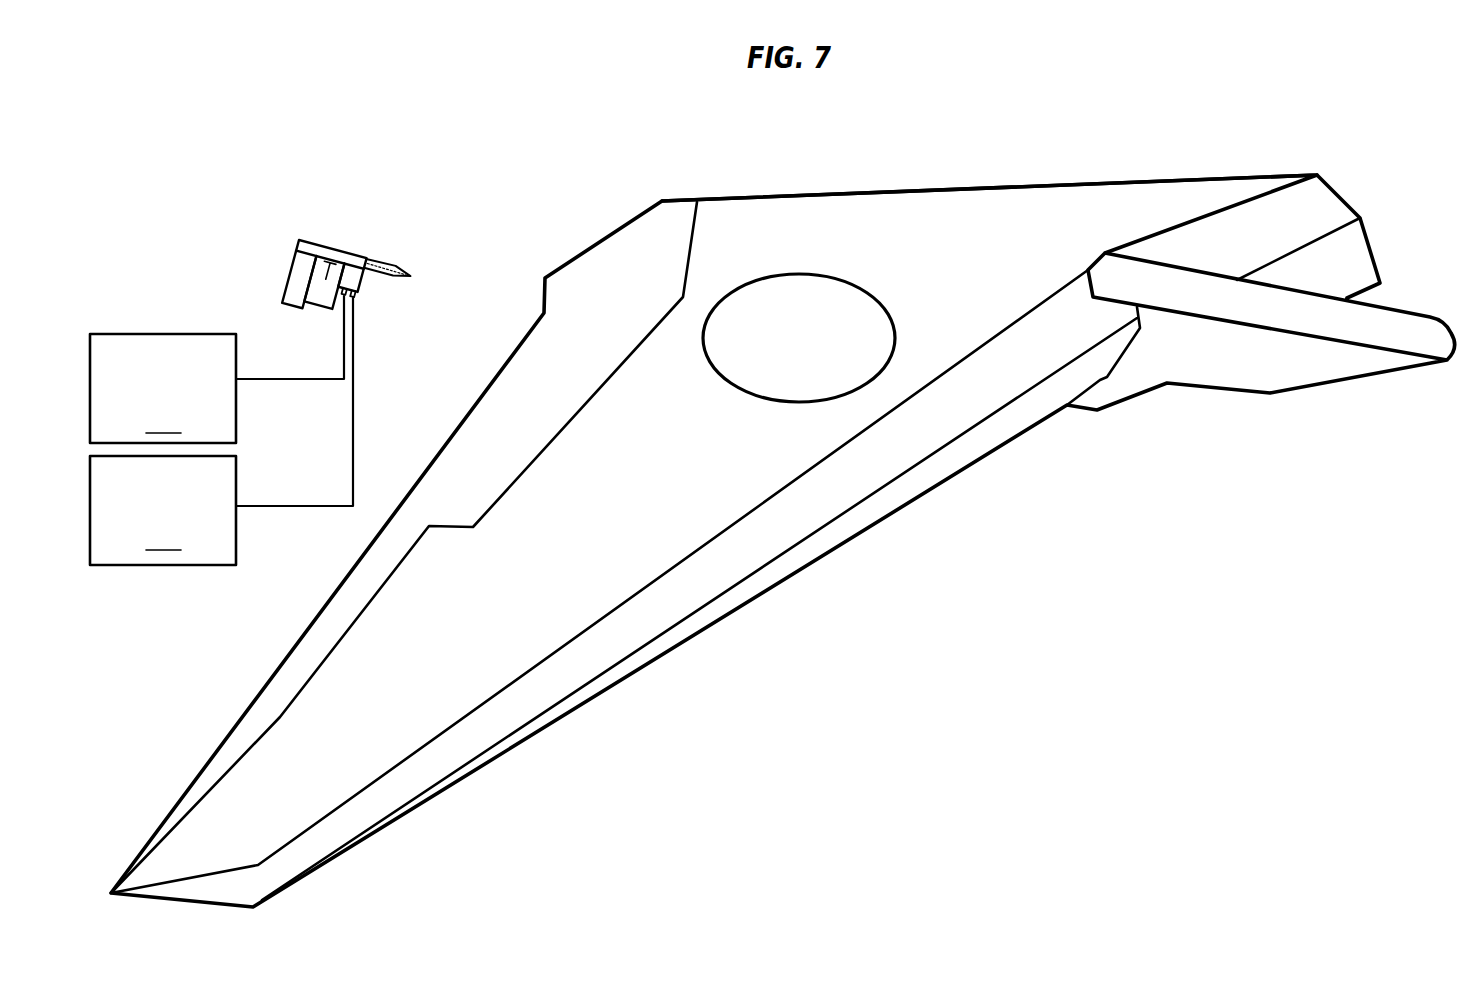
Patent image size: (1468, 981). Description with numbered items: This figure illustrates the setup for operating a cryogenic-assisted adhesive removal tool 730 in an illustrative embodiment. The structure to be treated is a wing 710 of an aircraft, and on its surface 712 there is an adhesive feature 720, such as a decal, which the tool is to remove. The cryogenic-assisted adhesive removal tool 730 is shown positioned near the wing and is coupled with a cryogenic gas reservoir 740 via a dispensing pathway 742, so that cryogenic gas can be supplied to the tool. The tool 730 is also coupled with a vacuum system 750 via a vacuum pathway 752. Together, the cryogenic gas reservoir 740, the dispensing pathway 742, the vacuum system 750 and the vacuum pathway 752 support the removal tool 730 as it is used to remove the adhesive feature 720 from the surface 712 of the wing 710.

The wing 710 is at (830, 193).
The surface 712 is at (957, 256).
The adhesive feature 720 is at (838, 278).
The cryogenic-assisted adhesive removal tool 730 is at (338, 249).
The cryogenic gas reservoir 740 is at (163, 388).
The dispensing pathway 742 is at (283, 382).
The vacuum system 750 is at (163, 510).
The vacuum pathway 752 is at (290, 509).